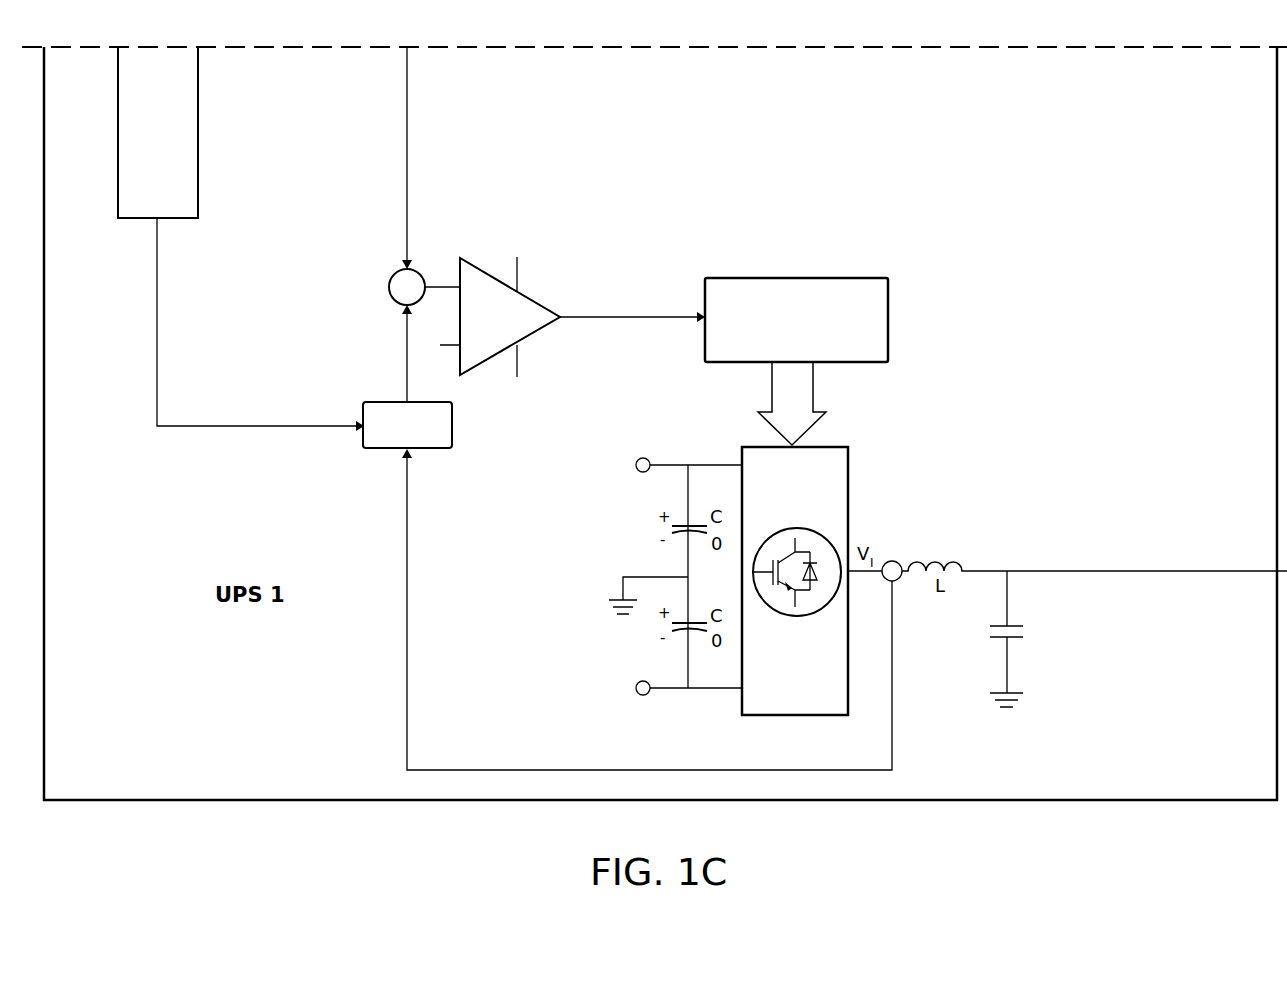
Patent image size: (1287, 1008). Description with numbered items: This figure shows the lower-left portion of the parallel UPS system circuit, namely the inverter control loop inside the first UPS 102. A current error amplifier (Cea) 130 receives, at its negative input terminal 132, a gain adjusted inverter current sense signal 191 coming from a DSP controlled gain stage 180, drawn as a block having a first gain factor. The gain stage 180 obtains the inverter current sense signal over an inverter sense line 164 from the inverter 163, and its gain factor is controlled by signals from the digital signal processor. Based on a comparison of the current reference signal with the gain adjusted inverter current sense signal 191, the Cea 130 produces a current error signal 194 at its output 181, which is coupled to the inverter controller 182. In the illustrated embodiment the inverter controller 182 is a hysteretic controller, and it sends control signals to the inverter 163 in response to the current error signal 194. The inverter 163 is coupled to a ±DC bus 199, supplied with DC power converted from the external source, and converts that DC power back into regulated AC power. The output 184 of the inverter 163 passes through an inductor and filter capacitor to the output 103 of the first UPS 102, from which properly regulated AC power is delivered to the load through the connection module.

The first UPS 102 is at (660, 423).
The output of the first UPS 103 is at (1275, 575).
The current error amplifier (Cea) 130 is at (487, 368).
The negative input terminal 132 is at (433, 282).
The inverter 163 is at (957, 426).
The inverter sense line 164 is at (897, 597).
The DSP controlled gain stage 180 is at (452, 437).
The output of the Cea 181 is at (562, 322).
The inverter controller 182 is at (860, 365).
The output of the inverter 184 is at (1028, 574).
The gain adjusted inverter current sense signal 191 is at (405, 356).
The current error signal 194 is at (684, 312).
The ±DC bus 199 is at (635, 475).